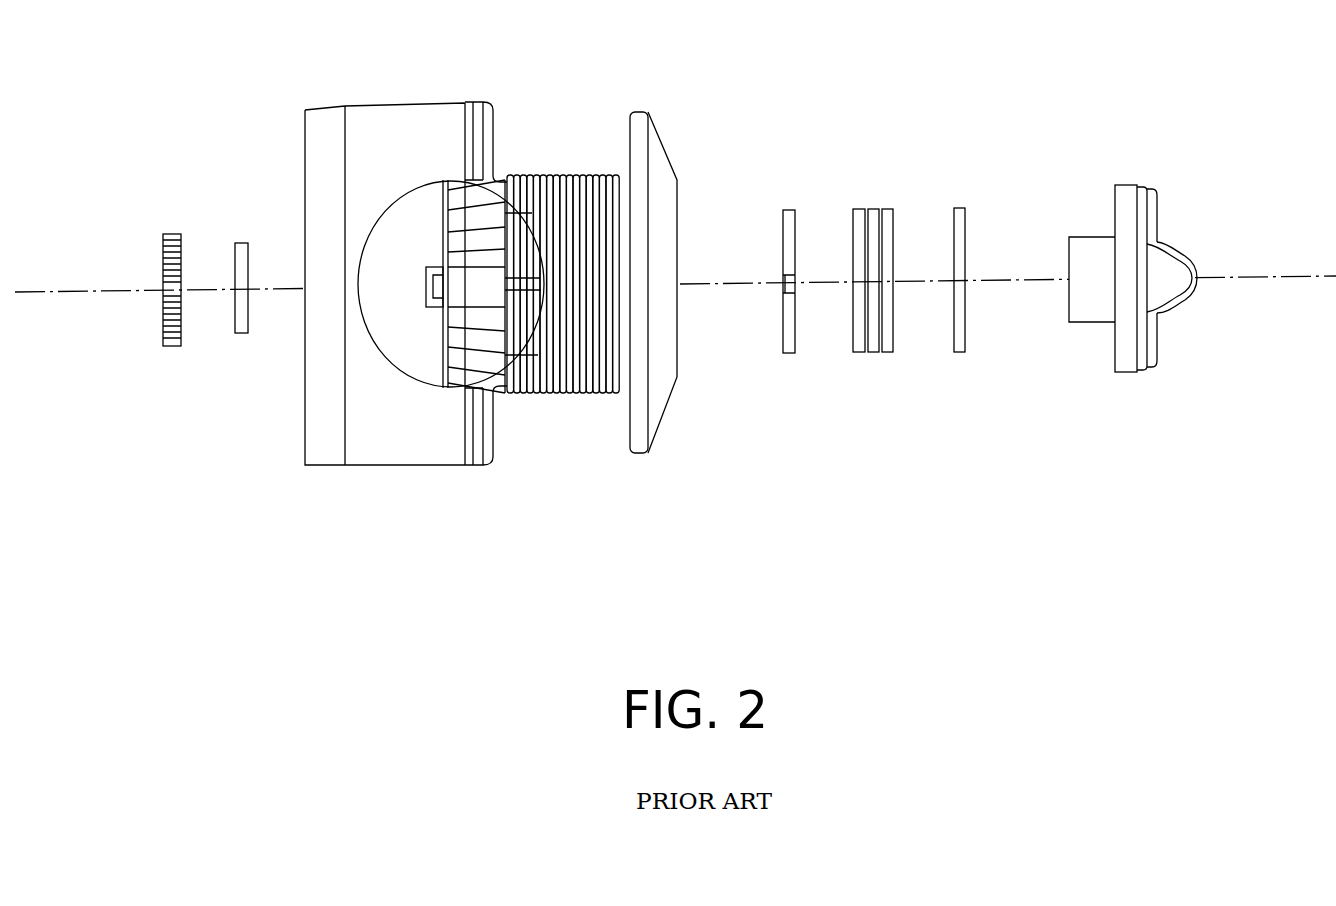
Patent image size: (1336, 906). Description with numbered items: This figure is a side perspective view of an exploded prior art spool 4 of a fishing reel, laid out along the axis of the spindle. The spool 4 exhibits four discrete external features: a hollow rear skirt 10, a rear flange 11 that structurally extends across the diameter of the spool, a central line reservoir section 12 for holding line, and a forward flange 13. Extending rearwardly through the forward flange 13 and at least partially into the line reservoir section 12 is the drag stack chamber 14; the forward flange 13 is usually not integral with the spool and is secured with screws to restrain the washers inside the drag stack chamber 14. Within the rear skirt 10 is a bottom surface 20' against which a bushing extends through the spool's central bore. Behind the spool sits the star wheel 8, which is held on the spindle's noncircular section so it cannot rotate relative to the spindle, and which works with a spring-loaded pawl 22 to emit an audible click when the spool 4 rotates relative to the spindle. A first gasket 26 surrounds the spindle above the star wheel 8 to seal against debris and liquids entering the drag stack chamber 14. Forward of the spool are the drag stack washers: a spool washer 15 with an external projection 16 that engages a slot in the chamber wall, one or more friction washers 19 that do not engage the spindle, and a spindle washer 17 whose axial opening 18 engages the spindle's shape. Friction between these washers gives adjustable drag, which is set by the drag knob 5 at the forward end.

The spool 4 is at (461, 571).
The drag knob 5 is at (1163, 312).
The star wheel 8 is at (172, 227).
The hollow rear skirt 10 is at (363, 467).
The rear flange 11 is at (497, 145).
The central line reservoir section 12 is at (561, 394).
The forward flange 13 is at (662, 394).
The drag stack chamber 14 is at (681, 361).
The spool washer 15 is at (788, 208).
The external projection 16 is at (784, 280).
The spindle washer 17 is at (946, 310).
The axial opening 18 is at (958, 208).
The friction washers 19 is at (888, 208).
The bottom surface 20' is at (470, 210).
The spring-loaded pawl 22 is at (429, 279).
The first gasket 26 is at (241, 344).